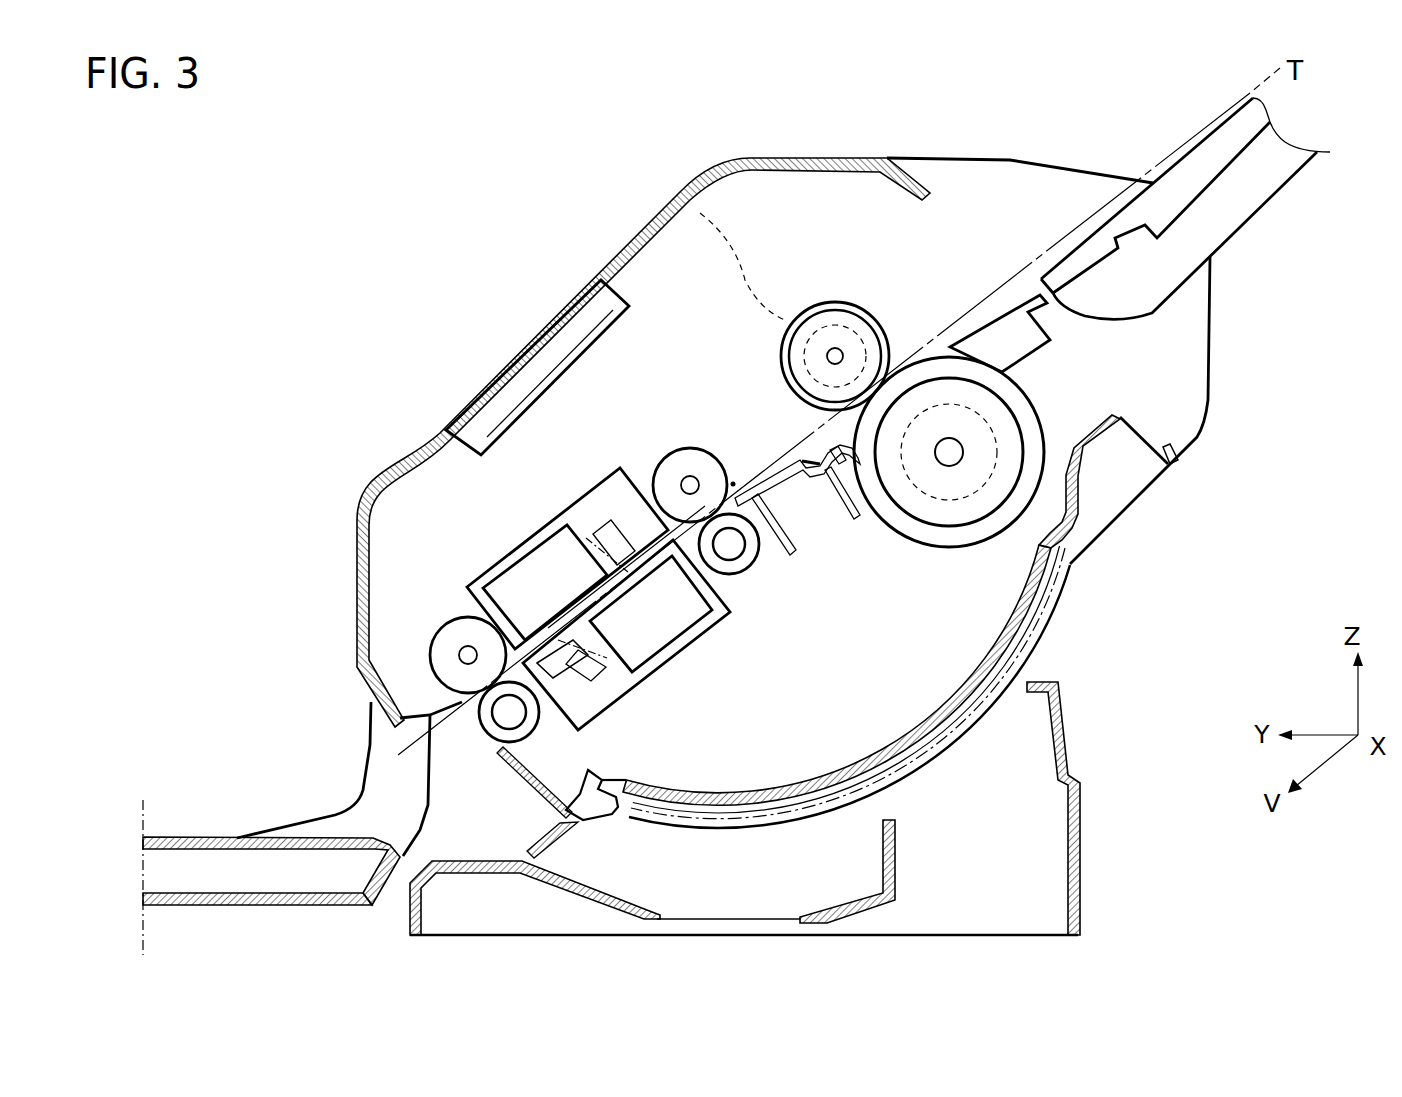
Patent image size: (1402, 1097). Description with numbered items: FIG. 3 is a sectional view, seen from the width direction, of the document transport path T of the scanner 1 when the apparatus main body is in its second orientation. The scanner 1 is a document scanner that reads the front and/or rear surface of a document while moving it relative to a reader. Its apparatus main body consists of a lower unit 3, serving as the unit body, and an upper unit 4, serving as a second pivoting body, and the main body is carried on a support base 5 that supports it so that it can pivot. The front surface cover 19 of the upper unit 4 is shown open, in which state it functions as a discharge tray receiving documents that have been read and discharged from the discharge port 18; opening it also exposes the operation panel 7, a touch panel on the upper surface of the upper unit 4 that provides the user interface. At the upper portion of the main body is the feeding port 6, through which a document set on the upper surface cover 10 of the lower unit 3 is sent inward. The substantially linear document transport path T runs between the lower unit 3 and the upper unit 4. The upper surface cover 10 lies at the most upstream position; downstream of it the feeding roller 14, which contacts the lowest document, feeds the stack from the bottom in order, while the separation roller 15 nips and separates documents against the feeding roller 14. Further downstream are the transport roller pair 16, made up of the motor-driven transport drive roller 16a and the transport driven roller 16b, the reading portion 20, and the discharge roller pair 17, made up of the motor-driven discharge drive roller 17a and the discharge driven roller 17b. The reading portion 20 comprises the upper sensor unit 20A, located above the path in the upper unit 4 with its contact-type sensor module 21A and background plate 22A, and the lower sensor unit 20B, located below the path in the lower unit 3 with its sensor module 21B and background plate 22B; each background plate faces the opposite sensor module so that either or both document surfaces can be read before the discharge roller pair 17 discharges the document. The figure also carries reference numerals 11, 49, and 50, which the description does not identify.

The scanner 1 is at (378, 183).
The lower unit 3 is at (1197, 437).
The upper unit 4 is at (712, 168).
The support base 5 is at (1080, 855).
The feeding port 6 is at (1046, 170).
The operation panel 7 is at (535, 345).
The upper surface cover 10 is at (1210, 130).
The guide member 11 is at (997, 320).
The feeding roller 14 is at (1035, 492).
The separation roller 15 is at (700, 213).
The transport roller pair 16 is at (732, 476).
The transport drive roller 16a is at (756, 560).
The transport driven roller 16b is at (690, 449).
The discharge roller pair 17 is at (405, 787).
The discharge drive roller 17a is at (533, 742).
The discharge driven roller 17b is at (430, 635).
The discharge port 18 is at (456, 750).
The front surface cover 19 is at (207, 838).
The reading portion 20 is at (515, 591).
The upper sensor unit 20A is at (546, 537).
The lower sensor unit 20B is at (634, 648).
The sensor module 21A is at (520, 556).
The sensor module 21B is at (678, 650).
The background plate 22A is at (636, 520).
The background plate 22B is at (570, 673).
The transfer position 49 is at (978, 490).
The charging roller 50 is at (815, 300).